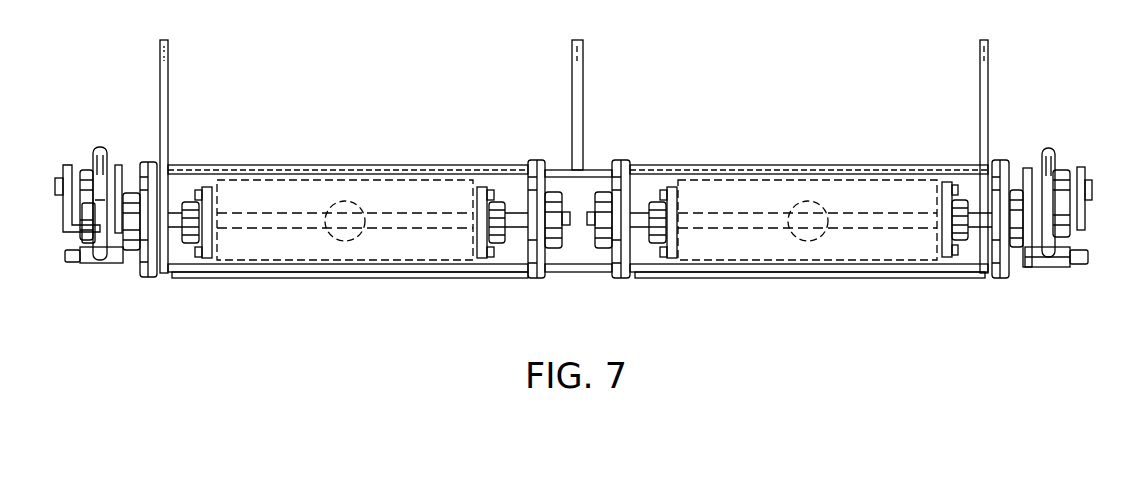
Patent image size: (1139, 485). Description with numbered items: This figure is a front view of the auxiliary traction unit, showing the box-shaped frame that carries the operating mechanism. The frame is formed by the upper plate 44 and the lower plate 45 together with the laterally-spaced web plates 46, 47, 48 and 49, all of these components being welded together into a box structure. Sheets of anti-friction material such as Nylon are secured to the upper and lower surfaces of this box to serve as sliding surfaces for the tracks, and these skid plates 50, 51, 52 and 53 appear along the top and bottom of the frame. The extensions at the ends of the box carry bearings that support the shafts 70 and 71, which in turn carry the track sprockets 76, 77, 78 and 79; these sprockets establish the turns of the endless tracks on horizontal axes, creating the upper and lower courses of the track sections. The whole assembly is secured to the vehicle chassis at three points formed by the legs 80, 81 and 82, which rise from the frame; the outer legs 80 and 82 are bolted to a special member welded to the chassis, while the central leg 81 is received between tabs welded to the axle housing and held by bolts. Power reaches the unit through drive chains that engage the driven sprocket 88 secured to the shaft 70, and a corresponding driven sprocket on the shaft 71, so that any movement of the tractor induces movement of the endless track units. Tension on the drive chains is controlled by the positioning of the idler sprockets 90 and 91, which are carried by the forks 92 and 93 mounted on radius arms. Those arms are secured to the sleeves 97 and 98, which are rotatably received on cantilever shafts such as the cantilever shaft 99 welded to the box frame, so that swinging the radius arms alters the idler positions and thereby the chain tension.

The upper plate 44 is at (593, 168).
The lower plate 45 is at (580, 272).
The web plate 46 is at (187, 175).
The web plate 47 is at (490, 178).
The web plate 48 is at (653, 173).
The web plate 49 is at (967, 172).
The skid plate 50 is at (785, 165).
The skid plate 51 is at (802, 278).
The skid plate 52 is at (345, 165).
The skid plate 53 is at (350, 278).
The shaft 70 is at (982, 227).
The shaft 71 is at (513, 227).
The track sprocket 76 is at (1001, 280).
The track sprocket 77 is at (621, 280).
The track sprocket 78 is at (535, 280).
The track sprocket 79 is at (150, 280).
The leg 80 is at (168, 90).
The leg 81 is at (583, 95).
The leg 82 is at (988, 90).
The driven sprocket 88 is at (78, 240).
The idler sprocket 90 is at (1048, 148).
The idler sprocket 91 is at (99, 147).
The fork 92 is at (1085, 176).
The fork 93 is at (62, 218).
The sleeve 97 is at (1043, 268).
The sleeve 98 is at (115, 268).
The cantilever shaft 99 is at (1088, 257).